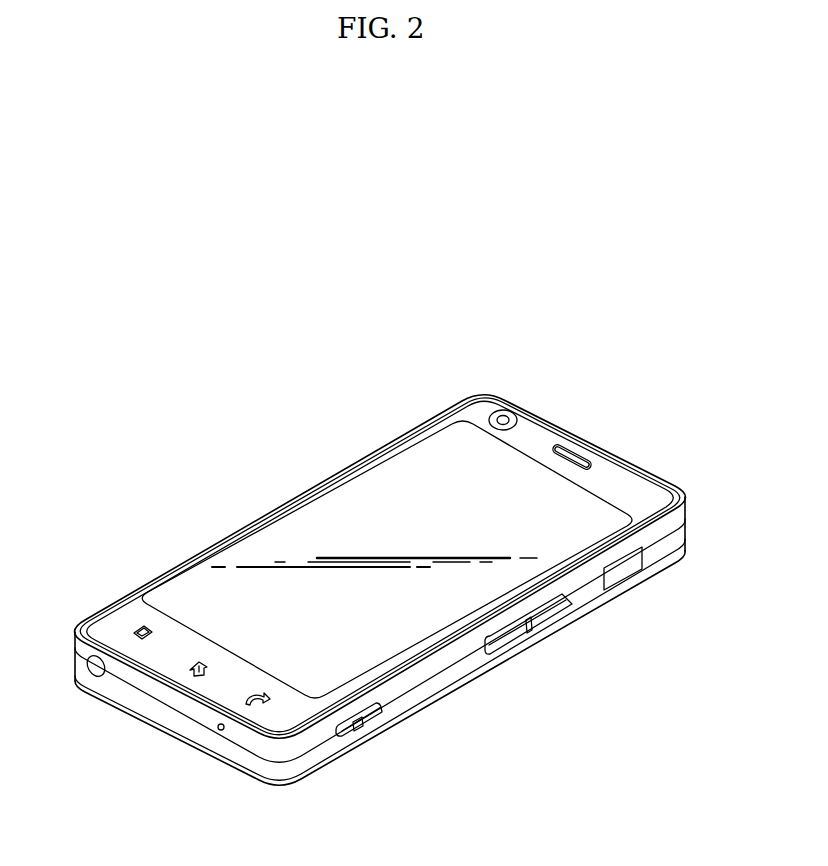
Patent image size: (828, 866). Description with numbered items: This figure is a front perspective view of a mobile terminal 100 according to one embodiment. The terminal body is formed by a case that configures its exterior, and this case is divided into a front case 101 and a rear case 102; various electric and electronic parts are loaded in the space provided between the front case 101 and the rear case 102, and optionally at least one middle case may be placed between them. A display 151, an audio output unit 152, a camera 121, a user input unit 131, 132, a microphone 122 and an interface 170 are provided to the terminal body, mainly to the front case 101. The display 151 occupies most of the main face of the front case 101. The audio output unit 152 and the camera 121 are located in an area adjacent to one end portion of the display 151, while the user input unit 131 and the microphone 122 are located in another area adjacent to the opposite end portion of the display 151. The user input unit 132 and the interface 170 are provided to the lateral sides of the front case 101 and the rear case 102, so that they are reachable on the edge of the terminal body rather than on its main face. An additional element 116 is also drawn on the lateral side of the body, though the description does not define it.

The mobile terminal 100 is at (312, 424).
The front case 101 is at (247, 737).
The rear case 102 is at (310, 758).
The interface / earphone jack 116 is at (95, 668).
The camera 121 is at (506, 418).
The microphone 122 is at (220, 730).
The user input unit 131 is at (137, 630).
The user input unit 132 is at (507, 642).
The display 151 is at (297, 533).
The audio output unit 152 is at (577, 458).
The interface 170 is at (625, 567).